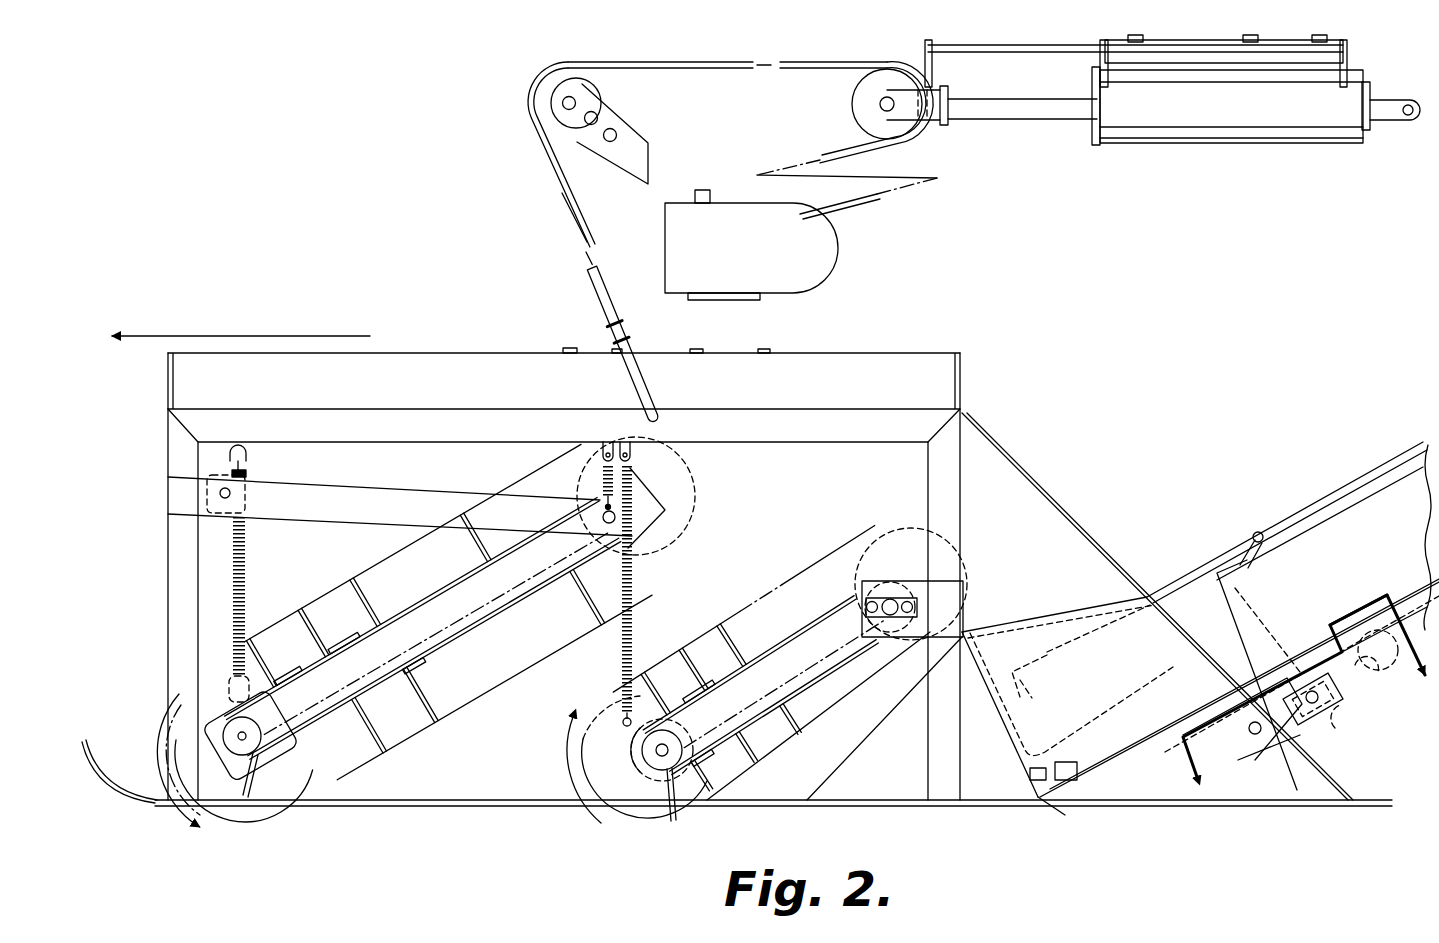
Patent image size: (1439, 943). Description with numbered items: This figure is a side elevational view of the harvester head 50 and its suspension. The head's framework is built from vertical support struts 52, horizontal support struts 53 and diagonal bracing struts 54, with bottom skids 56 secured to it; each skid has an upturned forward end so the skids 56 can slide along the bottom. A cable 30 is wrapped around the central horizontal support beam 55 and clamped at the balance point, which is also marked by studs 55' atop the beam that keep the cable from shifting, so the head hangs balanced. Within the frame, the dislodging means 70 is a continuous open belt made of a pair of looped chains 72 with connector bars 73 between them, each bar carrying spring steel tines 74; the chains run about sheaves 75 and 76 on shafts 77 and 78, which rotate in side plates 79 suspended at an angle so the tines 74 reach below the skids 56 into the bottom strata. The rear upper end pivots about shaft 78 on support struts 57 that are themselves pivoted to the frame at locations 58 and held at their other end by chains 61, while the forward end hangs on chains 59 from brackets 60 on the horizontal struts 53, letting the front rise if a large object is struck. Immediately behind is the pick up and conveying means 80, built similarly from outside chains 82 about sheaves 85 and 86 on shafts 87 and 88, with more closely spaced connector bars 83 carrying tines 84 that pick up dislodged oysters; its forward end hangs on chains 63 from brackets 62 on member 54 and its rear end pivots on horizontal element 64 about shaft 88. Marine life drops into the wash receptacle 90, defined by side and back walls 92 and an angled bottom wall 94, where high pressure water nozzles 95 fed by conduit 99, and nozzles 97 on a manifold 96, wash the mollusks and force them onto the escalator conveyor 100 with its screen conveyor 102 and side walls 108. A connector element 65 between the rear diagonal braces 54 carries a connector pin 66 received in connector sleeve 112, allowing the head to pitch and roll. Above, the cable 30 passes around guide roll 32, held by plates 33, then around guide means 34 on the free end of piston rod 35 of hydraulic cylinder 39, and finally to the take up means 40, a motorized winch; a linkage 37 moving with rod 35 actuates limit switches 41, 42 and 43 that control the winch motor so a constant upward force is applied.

The cable 30 is at (548, 188).
The guide roll 32 is at (603, 96).
The plates 33 is at (650, 143).
The guide means 34 is at (852, 118).
The piston rod 35 is at (1000, 110).
The linkage 37 is at (998, 52).
The hydraulic cylinder 39 is at (1195, 118).
The take up means 40 is at (838, 246).
The switch means 41 is at (1137, 44).
The switch means 42 is at (1250, 44).
The switch means 43 is at (1318, 44).
The harvester head 50 is at (1030, 348).
The vertical support struts 52 is at (168, 590).
The horizontal support struts 53 is at (200, 425).
The diagonal bracing struts 54 is at (1045, 512).
The central horizontal support beam 55 is at (581, 347).
The studs 55' is at (683, 332).
The bottom skids 56 is at (975, 806).
The support struts 57 is at (383, 484).
The locations 58 is at (230, 492).
The chains 59 is at (250, 558).
The brackets 60 is at (240, 453).
The chains 61 is at (575, 470).
The brackets 62 is at (650, 436).
The chains 63 is at (636, 646).
The horizontal element 64 is at (967, 603).
The connector element 65 is at (1242, 700).
The connector pin 66 is at (1300, 740).
The dislodging means 70 is at (472, 708).
The looped chains 72 is at (485, 637).
The connector bars 73 is at (415, 616).
The spring steel tines 74 is at (318, 623).
The sheave 75 is at (257, 773).
The sheave 76 is at (572, 556).
The shaft 77 is at (305, 692).
The shaft 78 is at (586, 606).
The side plates 79 is at (480, 590).
The pick up and conveying means 80 is at (765, 585).
The outside chains 82 is at (775, 633).
The connector bars 83 is at (760, 700).
The tines 84 is at (688, 664).
The sheave 85 is at (653, 823).
The sheave 86 is at (885, 595).
The shaft 87 is at (695, 727).
The shaft 88 is at (948, 575).
The wash receptacle 90 is at (1160, 735).
The side and back walls 92 is at (1180, 612).
The bottom wall 94 is at (1085, 790).
The high pressure water nozzles 95 is at (1040, 678).
The manifold 96 is at (1060, 812).
The high pressure nozzles 97 is at (1078, 748).
The conduit 99 is at (1290, 510).
The escalator conveyor 100 is at (1361, 708).
The screen conveyor 102 is at (1393, 595).
The side walls 108 is at (1376, 686).
The connector sleeve 112 is at (1348, 727).